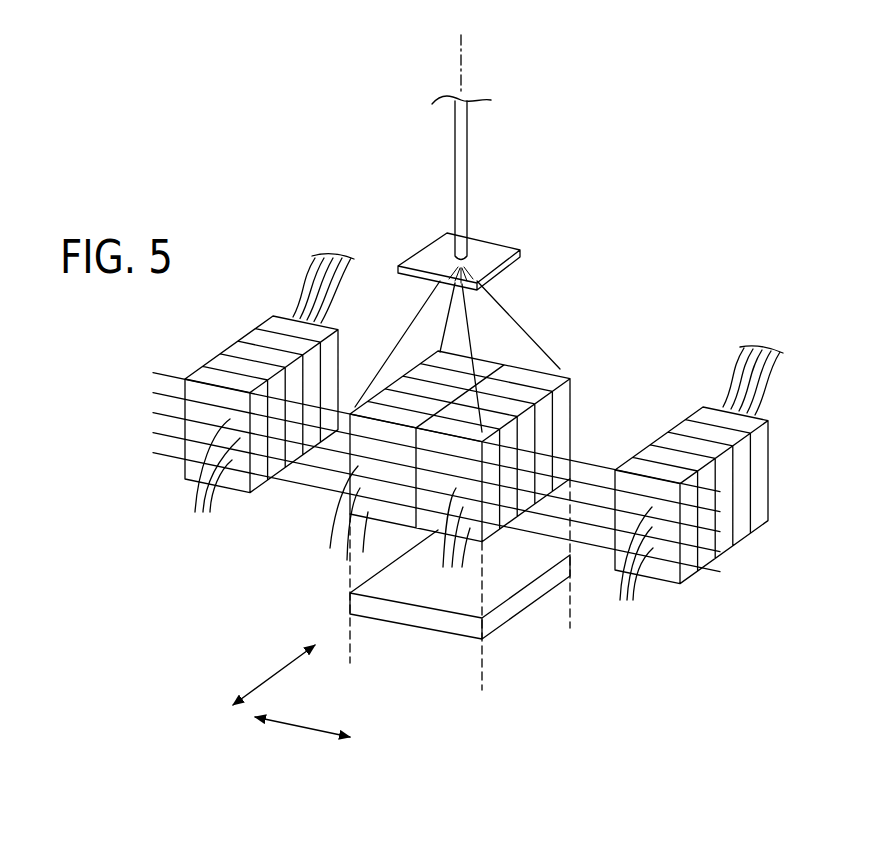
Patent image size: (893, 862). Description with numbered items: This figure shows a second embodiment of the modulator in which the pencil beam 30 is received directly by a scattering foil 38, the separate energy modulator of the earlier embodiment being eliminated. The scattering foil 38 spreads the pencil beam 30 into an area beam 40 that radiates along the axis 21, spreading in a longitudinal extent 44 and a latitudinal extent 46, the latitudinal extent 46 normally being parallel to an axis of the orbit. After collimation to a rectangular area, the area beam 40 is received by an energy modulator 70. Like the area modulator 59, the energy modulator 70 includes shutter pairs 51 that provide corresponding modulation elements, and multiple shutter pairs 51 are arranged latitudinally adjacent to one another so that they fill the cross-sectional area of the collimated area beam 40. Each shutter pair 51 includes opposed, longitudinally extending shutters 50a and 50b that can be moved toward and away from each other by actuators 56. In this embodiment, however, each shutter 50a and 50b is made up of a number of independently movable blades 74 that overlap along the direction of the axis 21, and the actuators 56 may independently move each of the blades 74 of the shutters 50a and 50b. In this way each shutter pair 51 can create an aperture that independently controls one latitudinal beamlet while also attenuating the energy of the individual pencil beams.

The axis 21 is at (466, 62).
The pencil beam 30 is at (468, 161).
The scattering foil 38 is at (489, 250).
The area beam 40 is at (505, 328).
The energy modulator 70 is at (581, 337).
The shutter pair 51 is at (367, 386).
The shutter 50a is at (291, 503).
The shutter 50b is at (501, 545).
The actuators 56 is at (436, 501).
The blades 74 is at (367, 515).
The area modulator 59 is at (353, 605).
The latitudinal extent 46 is at (275, 675).
The longitudinal extent 44 is at (302, 728).